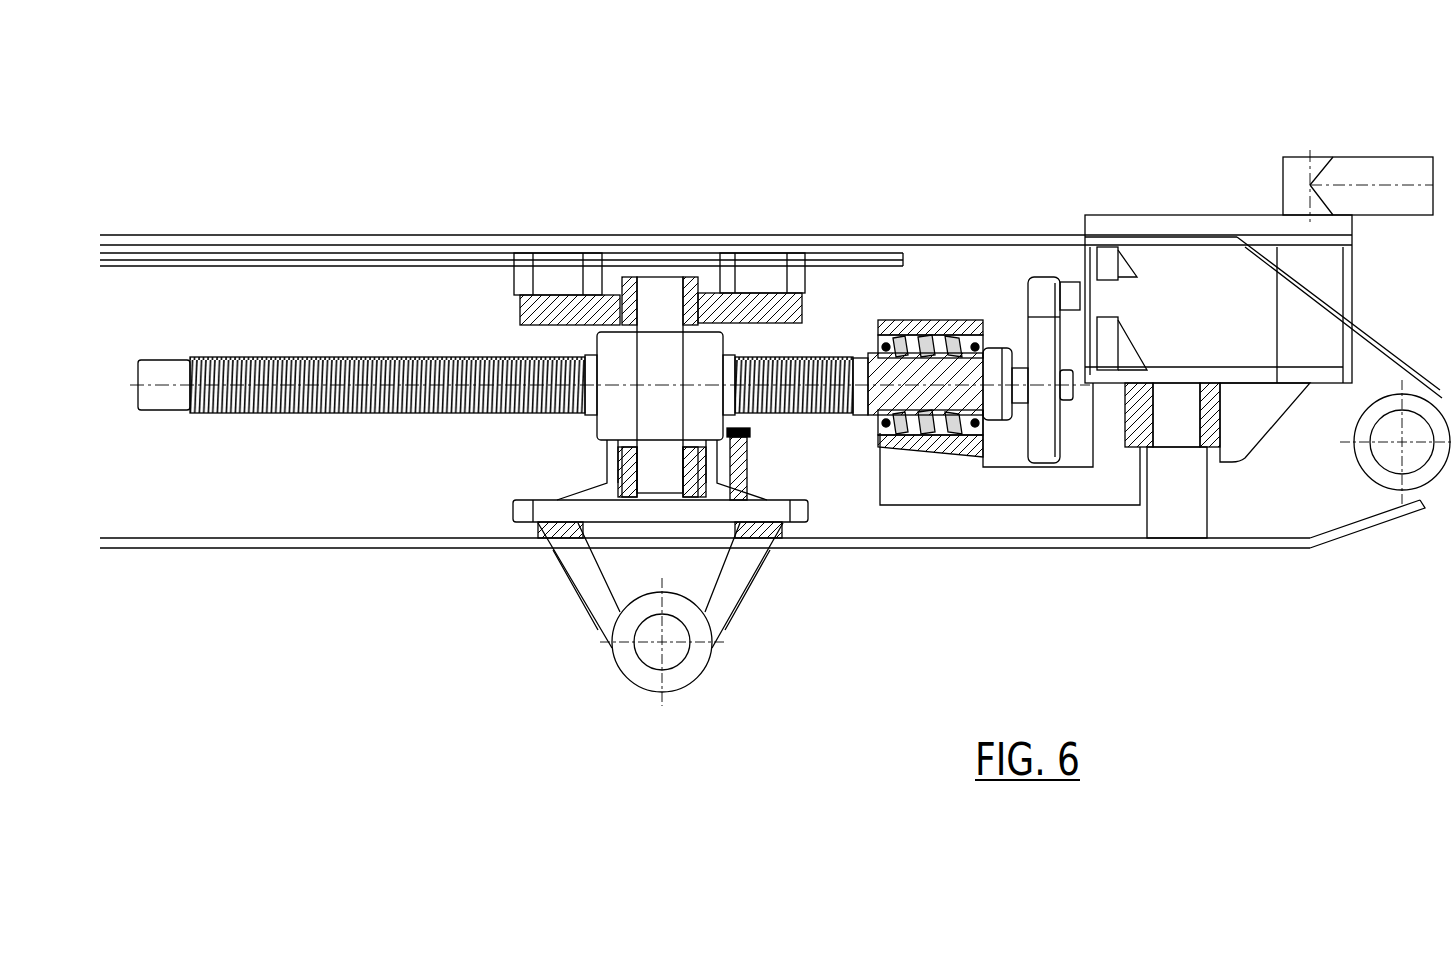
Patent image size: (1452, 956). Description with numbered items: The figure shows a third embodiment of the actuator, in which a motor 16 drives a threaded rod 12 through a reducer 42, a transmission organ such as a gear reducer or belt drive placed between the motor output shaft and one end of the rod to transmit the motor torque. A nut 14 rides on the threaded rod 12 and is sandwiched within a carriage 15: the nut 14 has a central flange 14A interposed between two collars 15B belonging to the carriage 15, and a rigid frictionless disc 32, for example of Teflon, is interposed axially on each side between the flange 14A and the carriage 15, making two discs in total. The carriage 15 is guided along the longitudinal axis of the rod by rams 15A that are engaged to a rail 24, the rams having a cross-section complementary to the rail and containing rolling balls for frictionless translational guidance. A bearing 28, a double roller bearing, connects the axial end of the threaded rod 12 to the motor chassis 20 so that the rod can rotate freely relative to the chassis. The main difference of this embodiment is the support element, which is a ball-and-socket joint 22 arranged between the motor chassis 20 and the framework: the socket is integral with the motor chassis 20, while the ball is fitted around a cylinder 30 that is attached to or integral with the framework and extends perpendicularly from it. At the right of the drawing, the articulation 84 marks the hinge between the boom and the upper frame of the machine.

The threaded rod 12 is at (393, 357).
The nut 14 is at (613, 417).
The central flange 14A is at (663, 300).
The carriage 15 is at (537, 510).
The rams 15A is at (767, 267).
The collars 15B is at (555, 333).
The motor 16 is at (1263, 274).
The motor chassis 20 is at (942, 480).
The ball-and-socket joint 22 is at (1258, 415).
The rail 24 is at (450, 250).
The bearing 28 is at (952, 296).
The cylinder 30 is at (1173, 497).
The disc 32 is at (560, 555).
The reducer 42 is at (1003, 325).
The articulation 84 is at (1396, 442).